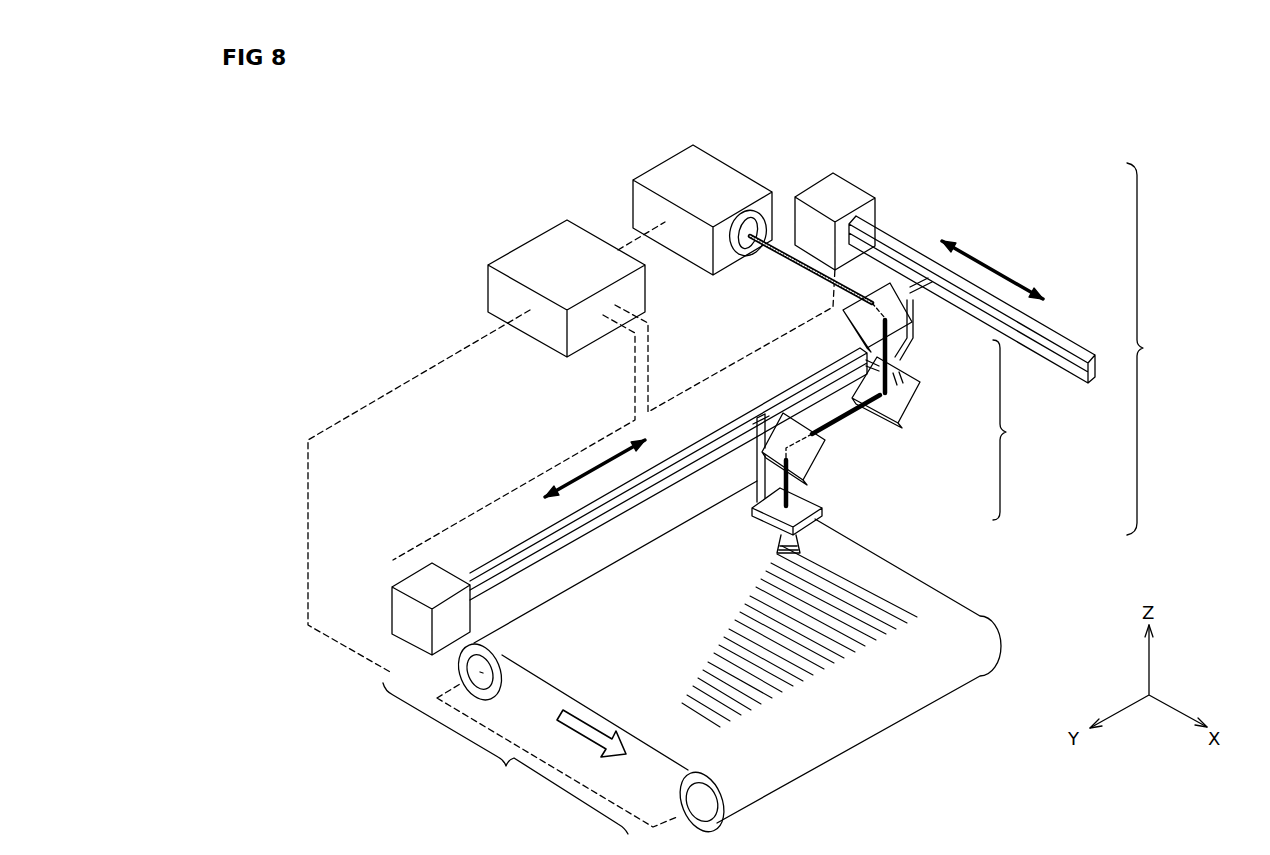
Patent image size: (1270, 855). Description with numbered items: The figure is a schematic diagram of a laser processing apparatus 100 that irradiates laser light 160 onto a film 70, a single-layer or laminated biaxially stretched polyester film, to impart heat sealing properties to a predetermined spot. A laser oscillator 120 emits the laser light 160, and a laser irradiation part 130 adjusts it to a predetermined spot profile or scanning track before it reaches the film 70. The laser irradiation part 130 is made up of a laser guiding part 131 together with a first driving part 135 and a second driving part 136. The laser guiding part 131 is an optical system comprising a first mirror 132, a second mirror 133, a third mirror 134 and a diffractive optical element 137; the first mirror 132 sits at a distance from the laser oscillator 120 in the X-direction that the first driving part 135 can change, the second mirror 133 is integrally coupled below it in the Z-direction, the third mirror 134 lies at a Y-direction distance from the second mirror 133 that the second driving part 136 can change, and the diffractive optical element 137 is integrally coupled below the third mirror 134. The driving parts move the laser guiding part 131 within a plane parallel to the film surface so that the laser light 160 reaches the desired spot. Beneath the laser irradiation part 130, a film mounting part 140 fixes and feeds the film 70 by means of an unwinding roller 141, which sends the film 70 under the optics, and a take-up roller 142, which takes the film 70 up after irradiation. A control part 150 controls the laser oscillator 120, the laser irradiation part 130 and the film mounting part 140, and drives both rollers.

The laser processing apparatus 100 is at (285, 131).
The laser oscillator 120 is at (718, 163).
The laser irradiation part 130 is at (1215, 358).
The laser guiding part 131 is at (1087, 441).
The first mirror 132 is at (897, 328).
The second mirror 133 is at (898, 398).
The third mirror 134 is at (812, 462).
The first driving part 135 is at (848, 192).
The second driving part 136 is at (404, 610).
The diffractive optical element 137 is at (820, 515).
The film mounting part 140 is at (692, 659).
The unwinding roller 141 is at (463, 667).
The take-up roller 142 is at (681, 789).
The control part 150 is at (493, 287).
The laser light 160 is at (820, 280).
The film 70 is at (927, 595).